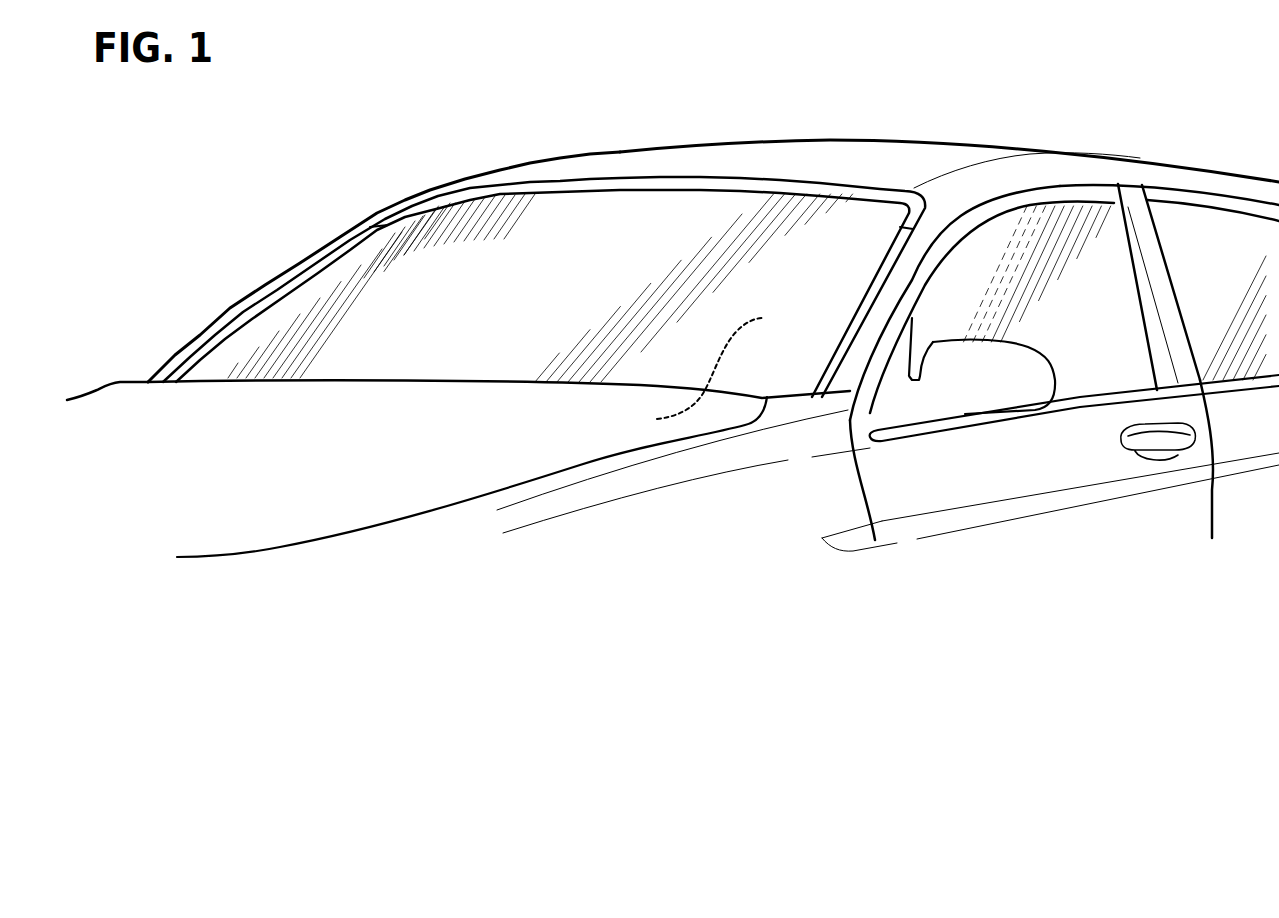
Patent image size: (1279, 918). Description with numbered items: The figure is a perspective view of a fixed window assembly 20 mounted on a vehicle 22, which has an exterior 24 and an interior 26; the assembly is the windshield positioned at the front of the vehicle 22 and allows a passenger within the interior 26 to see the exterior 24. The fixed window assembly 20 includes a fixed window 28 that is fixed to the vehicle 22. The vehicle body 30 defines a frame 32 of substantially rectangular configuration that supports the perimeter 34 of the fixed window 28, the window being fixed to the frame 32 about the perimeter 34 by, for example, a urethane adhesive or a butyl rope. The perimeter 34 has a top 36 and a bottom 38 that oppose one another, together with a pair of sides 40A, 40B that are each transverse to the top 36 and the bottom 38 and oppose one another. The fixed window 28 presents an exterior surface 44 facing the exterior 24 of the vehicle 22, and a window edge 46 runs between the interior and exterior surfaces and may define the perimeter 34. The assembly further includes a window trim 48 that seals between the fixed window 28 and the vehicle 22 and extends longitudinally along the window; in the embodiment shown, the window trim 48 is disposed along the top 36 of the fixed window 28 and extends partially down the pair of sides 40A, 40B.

The fixed window assembly 20 is at (390, 188).
The vehicle 22 is at (973, 152).
The exterior 24 is at (150, 323).
The interior 26 is at (695, 375).
The fixed window 28 is at (610, 208).
The vehicle body 30 is at (778, 155).
The frame 32 is at (860, 343).
The perimeter 34 is at (715, 185).
The top 36 is at (527, 188).
The bottom 38 is at (477, 385).
The side 40A is at (255, 311).
The side 40B is at (868, 285).
The exterior surface 44 is at (523, 311).
The window edge 46 is at (840, 188).
The window trim 48 is at (905, 183).